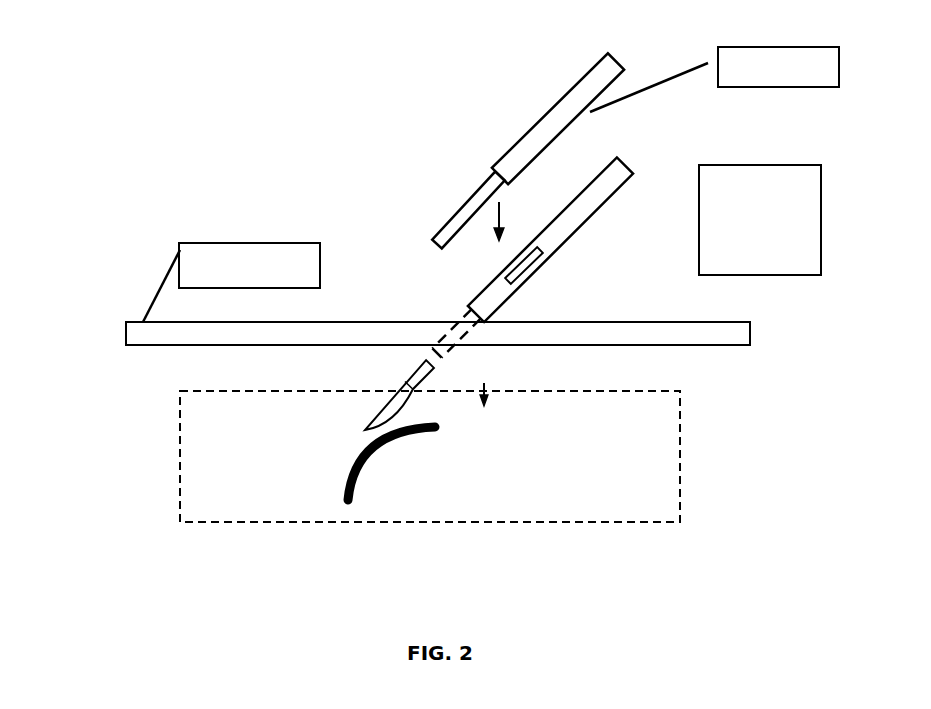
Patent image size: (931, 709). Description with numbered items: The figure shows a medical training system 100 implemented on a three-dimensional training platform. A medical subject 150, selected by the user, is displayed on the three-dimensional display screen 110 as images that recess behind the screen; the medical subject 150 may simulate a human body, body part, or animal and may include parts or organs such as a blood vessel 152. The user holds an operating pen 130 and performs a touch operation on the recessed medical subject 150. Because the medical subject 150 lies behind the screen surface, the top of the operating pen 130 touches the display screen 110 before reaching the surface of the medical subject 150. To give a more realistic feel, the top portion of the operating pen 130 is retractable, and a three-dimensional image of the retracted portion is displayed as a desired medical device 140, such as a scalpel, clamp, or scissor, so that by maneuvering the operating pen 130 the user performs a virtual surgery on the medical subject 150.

The medical training system 100 is at (213, 74).
The 3D display screen 110 is at (125, 332).
The operating pen 130 is at (553, 105).
The medical device 140 is at (390, 408).
The medical subject 150 is at (227, 493).
The blood vessel 152 is at (393, 442).